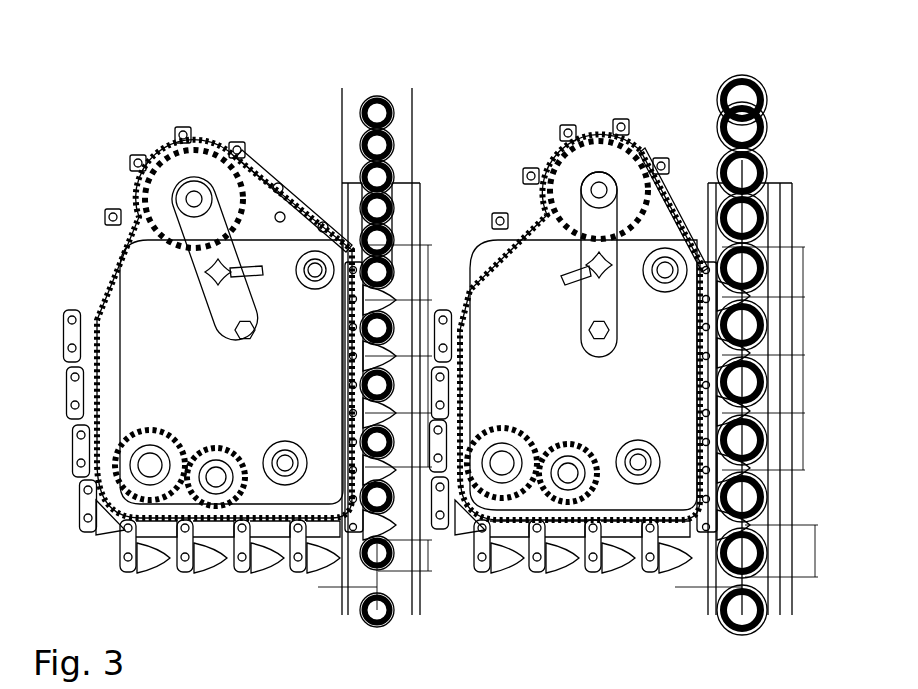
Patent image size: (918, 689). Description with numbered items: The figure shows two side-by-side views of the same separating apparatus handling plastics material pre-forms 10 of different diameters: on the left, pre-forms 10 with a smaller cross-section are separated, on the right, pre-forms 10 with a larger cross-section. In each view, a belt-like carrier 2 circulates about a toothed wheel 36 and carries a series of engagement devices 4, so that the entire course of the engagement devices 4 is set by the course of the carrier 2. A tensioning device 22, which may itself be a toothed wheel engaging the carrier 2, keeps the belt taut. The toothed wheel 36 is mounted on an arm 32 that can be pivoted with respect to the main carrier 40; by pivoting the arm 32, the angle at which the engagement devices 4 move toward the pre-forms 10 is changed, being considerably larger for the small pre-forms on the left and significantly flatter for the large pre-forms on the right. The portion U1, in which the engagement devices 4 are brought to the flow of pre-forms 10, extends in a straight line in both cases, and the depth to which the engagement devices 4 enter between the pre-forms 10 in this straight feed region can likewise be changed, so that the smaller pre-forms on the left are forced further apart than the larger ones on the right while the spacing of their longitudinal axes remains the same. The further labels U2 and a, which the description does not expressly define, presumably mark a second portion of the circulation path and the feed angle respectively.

The carrier 2 is at (622, 132).
The engagement devices 4 is at (390, 355).
The plastics material pre-forms 10 is at (395, 240).
The tensioning device 22 is at (100, 305).
The arm 32 is at (213, 230).
The toothed wheel 36 is at (192, 168).
The main carrier 40 is at (320, 473).
The portion U1 is at (300, 190).
The circulation direction of cutting chain U2 is at (324, 403).
The angle a is at (360, 187).